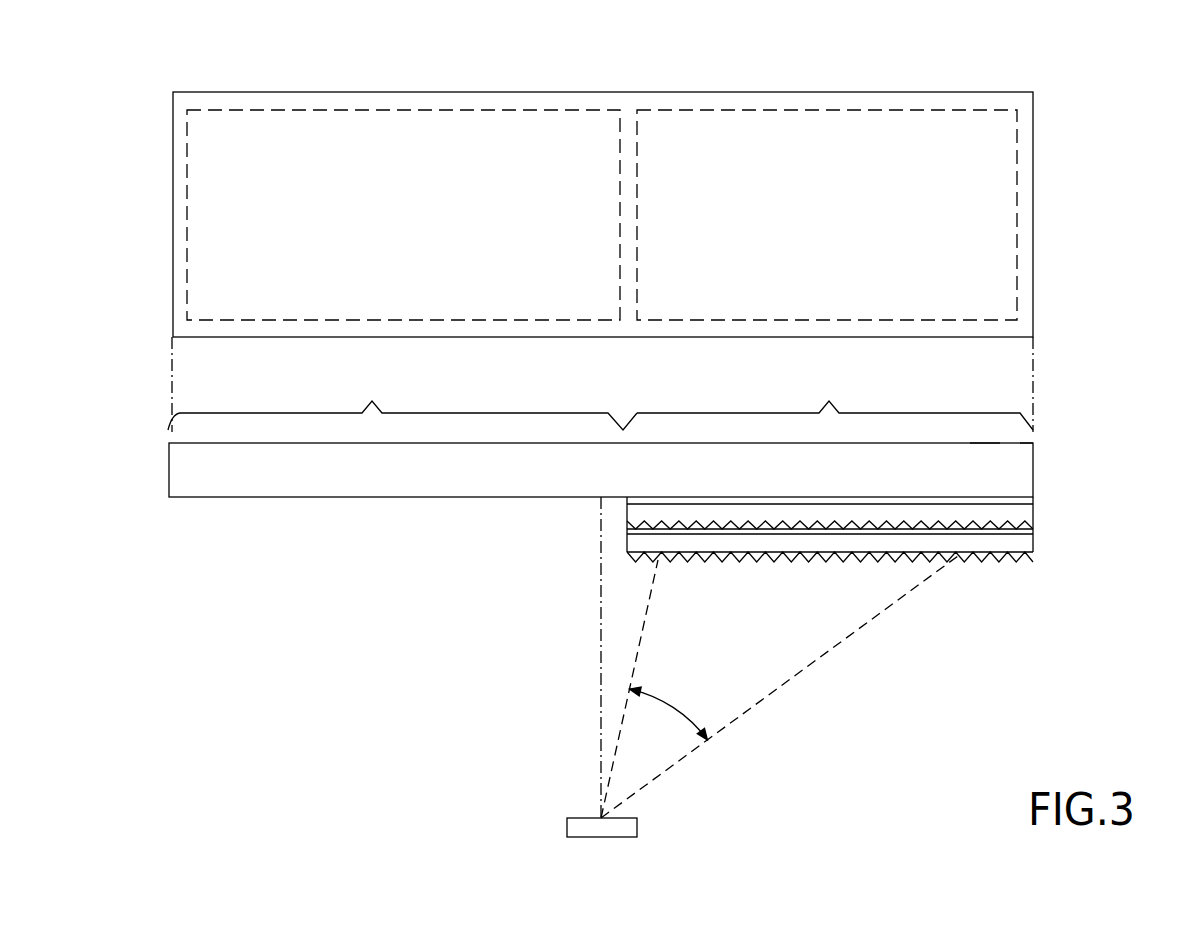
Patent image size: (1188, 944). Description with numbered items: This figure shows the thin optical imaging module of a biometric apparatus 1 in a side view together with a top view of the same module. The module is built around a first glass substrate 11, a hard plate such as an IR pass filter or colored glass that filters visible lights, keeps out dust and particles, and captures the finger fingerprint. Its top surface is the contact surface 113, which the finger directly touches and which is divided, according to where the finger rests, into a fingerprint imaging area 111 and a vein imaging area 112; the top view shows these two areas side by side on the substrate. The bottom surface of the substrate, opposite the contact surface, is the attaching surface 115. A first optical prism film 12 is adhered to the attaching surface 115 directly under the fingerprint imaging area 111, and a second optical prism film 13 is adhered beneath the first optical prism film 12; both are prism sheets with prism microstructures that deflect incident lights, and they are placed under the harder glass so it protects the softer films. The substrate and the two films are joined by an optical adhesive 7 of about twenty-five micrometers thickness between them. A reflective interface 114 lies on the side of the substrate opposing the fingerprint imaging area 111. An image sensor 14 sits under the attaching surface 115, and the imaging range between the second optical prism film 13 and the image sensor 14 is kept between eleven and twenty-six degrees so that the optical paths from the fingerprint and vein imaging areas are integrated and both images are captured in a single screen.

The thin optical imaging module of a biometric apparatus 1 is at (665, 416).
The optical adhesive 7 is at (1033, 500).
The first glass substrate 11 is at (1033, 467).
The first optical prism film 12 is at (1033, 513).
The second optical prism film 13 is at (1033, 552).
The image sensor 14 is at (637, 828).
The fingerprint imaging area 111 is at (803, 110).
The vein imaging area 112 is at (354, 110).
The contact surface 113 is at (1025, 444).
The reflective interface 114 is at (981, 451).
The attaching surface 115 is at (475, 498).